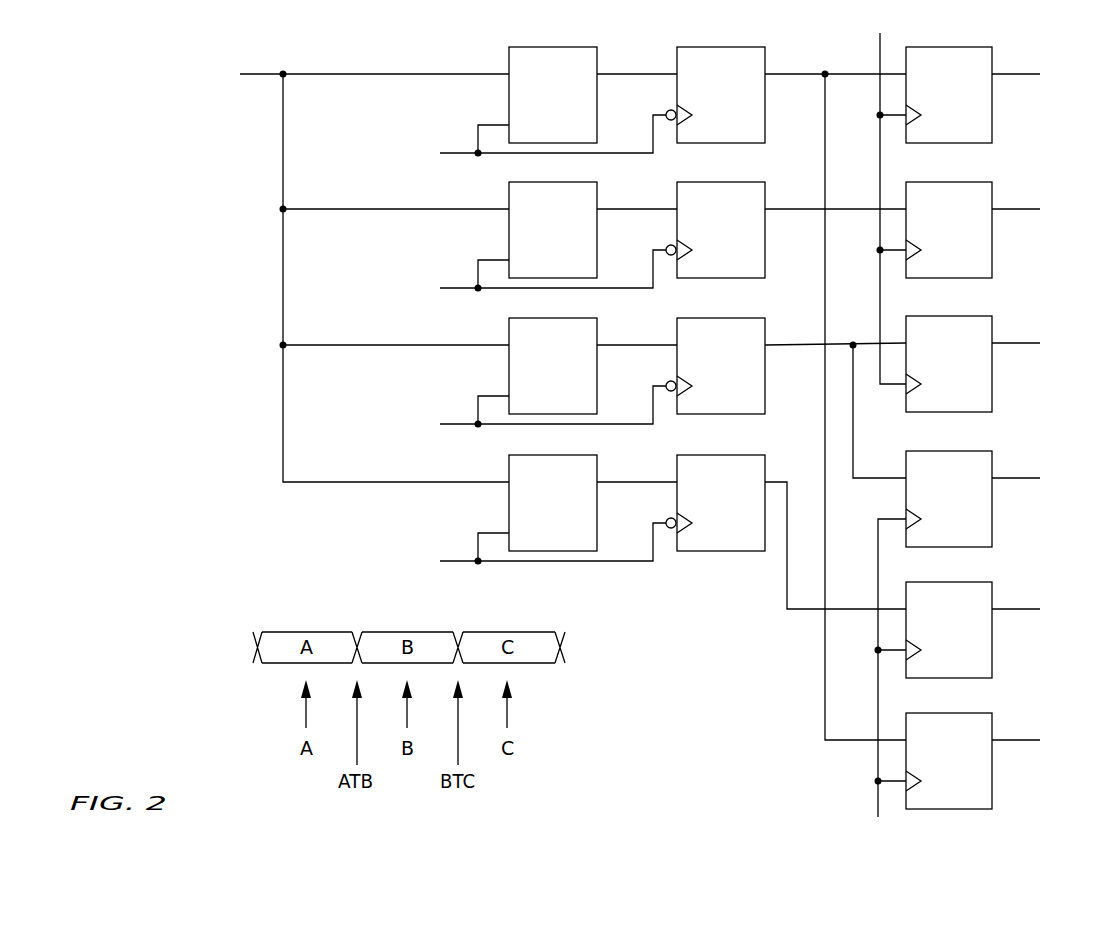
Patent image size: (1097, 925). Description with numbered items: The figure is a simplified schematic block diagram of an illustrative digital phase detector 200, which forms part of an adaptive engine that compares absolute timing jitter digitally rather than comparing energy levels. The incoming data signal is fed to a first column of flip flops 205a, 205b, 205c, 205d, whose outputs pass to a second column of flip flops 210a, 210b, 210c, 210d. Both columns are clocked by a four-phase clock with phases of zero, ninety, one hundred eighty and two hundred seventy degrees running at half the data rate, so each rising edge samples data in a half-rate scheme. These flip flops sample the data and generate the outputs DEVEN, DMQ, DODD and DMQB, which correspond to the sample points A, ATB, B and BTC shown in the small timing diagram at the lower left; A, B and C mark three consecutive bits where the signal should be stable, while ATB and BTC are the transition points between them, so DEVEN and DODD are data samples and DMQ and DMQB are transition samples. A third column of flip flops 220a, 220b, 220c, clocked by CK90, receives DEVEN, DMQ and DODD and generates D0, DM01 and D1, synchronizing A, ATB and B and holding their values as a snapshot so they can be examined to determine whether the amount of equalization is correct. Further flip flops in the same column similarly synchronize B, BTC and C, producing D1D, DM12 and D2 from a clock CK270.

The digital phase detector 200 is at (403, 27).
The flip flop 205a is at (555, 47).
The flip flop 205b is at (555, 182).
The flip flop 205c is at (555, 318).
The flip flop 205d is at (555, 455).
The flip flop 210a is at (720, 47).
The flip flop 210b is at (720, 182).
The flip flop 210c is at (720, 318).
The flip flop 210d is at (720, 455).
The flip flop 220a is at (934, 47).
The flip flop 220b is at (934, 182).
The flip flop 220c is at (934, 316).